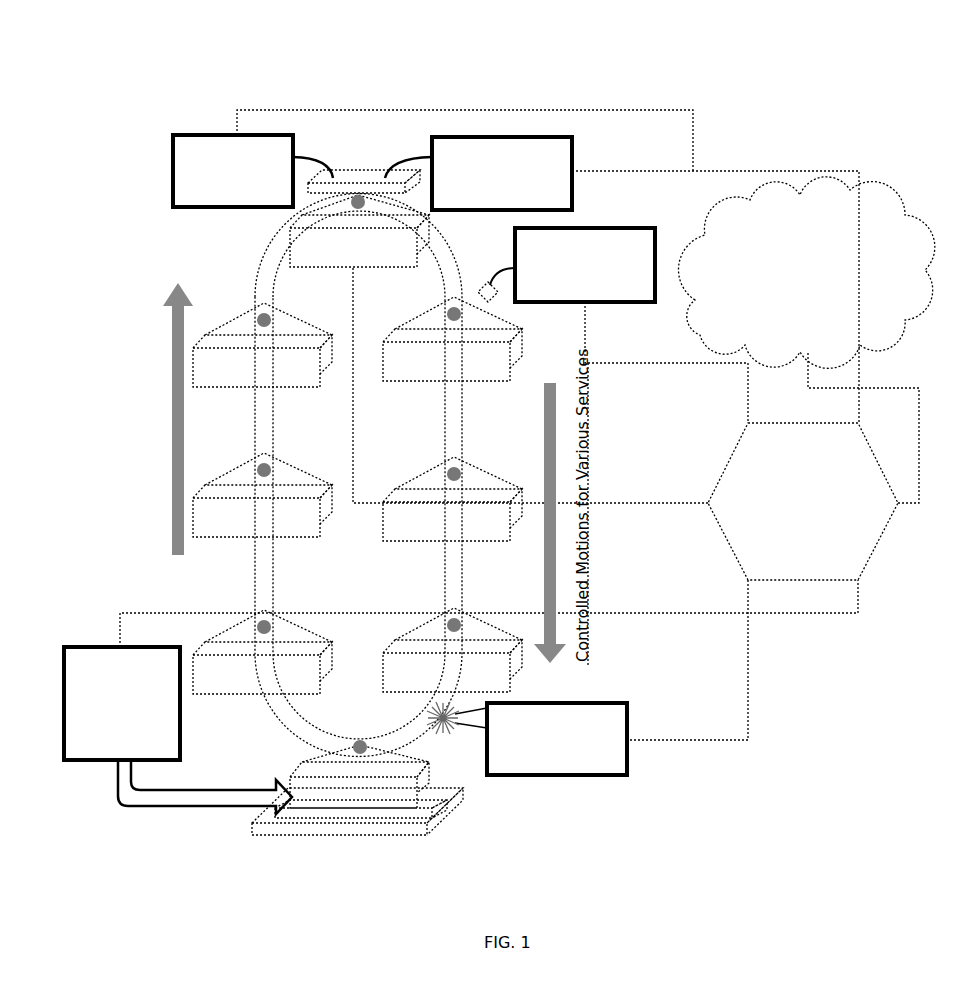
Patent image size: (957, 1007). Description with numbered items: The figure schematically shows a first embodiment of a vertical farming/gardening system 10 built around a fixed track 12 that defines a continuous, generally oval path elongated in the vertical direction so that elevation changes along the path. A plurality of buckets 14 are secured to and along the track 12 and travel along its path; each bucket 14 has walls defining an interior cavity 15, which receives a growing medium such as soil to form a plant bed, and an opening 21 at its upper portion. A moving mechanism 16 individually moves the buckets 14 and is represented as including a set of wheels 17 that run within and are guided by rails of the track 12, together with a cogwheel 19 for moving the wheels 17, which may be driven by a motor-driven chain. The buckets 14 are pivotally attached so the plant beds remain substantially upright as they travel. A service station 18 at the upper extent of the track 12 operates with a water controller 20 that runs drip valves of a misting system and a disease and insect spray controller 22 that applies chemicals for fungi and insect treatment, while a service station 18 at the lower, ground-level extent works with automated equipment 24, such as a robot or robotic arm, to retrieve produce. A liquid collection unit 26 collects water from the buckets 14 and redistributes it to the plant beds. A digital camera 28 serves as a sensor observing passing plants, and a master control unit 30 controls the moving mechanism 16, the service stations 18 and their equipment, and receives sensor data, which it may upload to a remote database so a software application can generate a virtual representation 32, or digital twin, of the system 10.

The vertical farming/gardening system 10 is at (163, 92).
The track 12 is at (262, 266).
The bucket 14 is at (357, 511).
The interior cavity 15 is at (336, 222).
The moving mechanism 16 is at (541, 739).
The wheels 17 is at (258, 317).
The service station 18 is at (362, 172).
The cogwheel 19 is at (447, 728).
The water controller 20 is at (233, 171).
The opening 21 is at (306, 219).
The disease and insect spray controller 22 is at (502, 173).
The automated equipment 24 is at (178, 730).
The liquid collection unit 26 is at (447, 797).
The digital camera 28 is at (566, 265).
The master control unit 30 is at (803, 501).
The virtual representation 32 is at (806, 272).